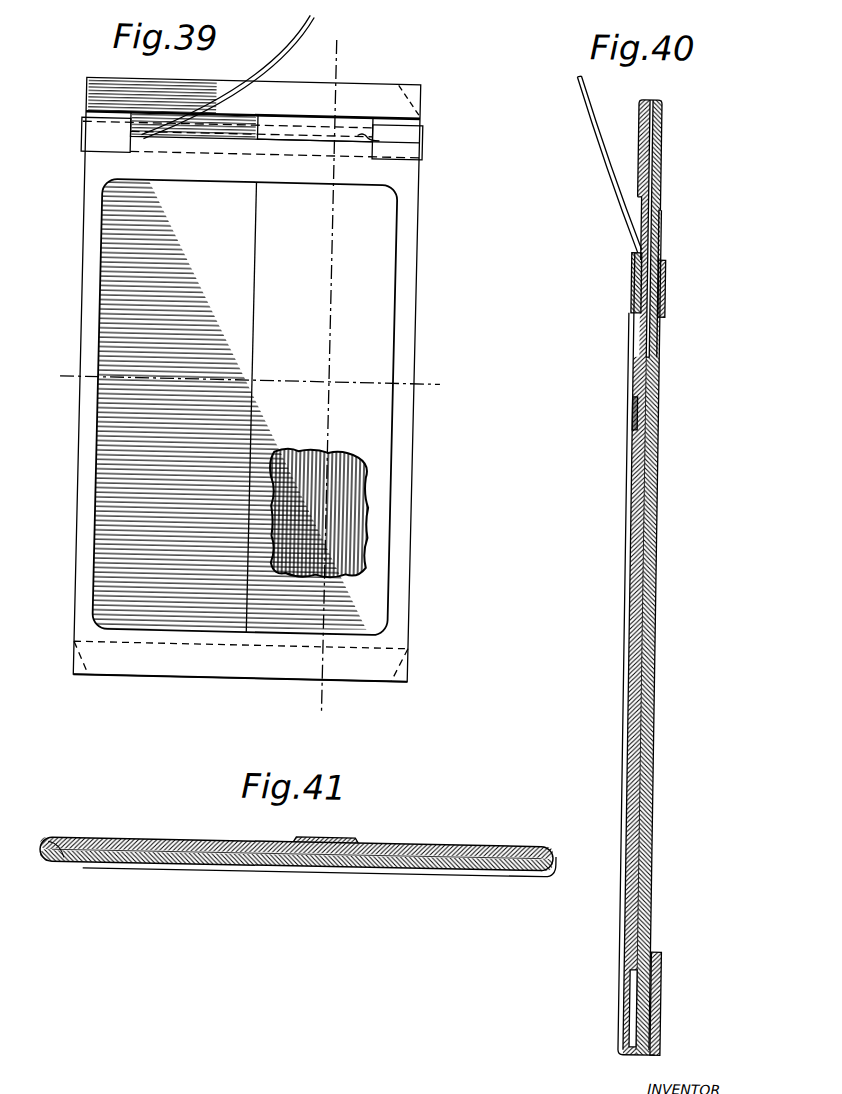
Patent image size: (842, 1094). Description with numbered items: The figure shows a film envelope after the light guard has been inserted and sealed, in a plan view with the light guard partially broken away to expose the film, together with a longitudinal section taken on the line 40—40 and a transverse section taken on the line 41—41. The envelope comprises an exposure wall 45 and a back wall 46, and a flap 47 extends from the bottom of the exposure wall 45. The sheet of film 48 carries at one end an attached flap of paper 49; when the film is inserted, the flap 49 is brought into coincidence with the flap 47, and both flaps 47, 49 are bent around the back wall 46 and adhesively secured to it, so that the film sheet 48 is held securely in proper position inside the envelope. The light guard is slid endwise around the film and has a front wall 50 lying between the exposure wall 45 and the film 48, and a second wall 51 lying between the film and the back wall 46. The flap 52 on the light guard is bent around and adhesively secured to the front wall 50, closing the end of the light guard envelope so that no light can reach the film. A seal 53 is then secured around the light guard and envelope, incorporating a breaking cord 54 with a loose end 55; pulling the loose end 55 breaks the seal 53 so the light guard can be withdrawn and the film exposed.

In FIG. 39, the section line 40— 40 is at (338, 713).
In FIG. 39, the section line 41— 41 is at (447, 373).
In FIG. 39, the exposure wall 45 is at (300, 176).
In FIG. 40, the exposure wall 45 is at (632, 345).
In FIG. 41, the exposure wall 45 is at (93, 871).
In FIG. 40, the back wall 46 is at (657, 703).
In FIG. 41, the back wall 46 is at (112, 841).
In FIG. 39, the flap 47 is at (144, 645).
In FIG. 40, the flap 47 is at (664, 1010).
In FIG. 39, the sheet of film 48 is at (353, 522).
In FIG. 40, the sheet of film 48 is at (640, 427).
In FIG. 41, the sheet of film 48 is at (408, 855).
In FIG. 40, the flap of paper 49 is at (644, 988).
In FIG. 39, the front wall of the light guard 50 is at (382, 261).
In FIG. 40, the front wall of the light guard 50 is at (636, 650).
In FIG. 41, the front wall of the light guard 50 is at (203, 856).
In FIG. 40, the second wall of the light guard 51 is at (645, 798).
In FIG. 41, the second wall of the light guard 51 is at (193, 844).
In FIG. 39, the flap on the light guard 52 is at (403, 77).
In FIG. 40, the flap on the light guard 52 is at (632, 130).
In FIG. 39, the seal 53 is at (395, 150).
In FIG. 40, the seal 53 is at (661, 293).
In FIG. 39, the breaking cord 54 is at (224, 140).
In FIG. 40, the breaking cord 54 is at (658, 260).
In FIG. 39, the loose end 55 is at (292, 38).
In FIG. 40, the loose end 55 is at (597, 145).